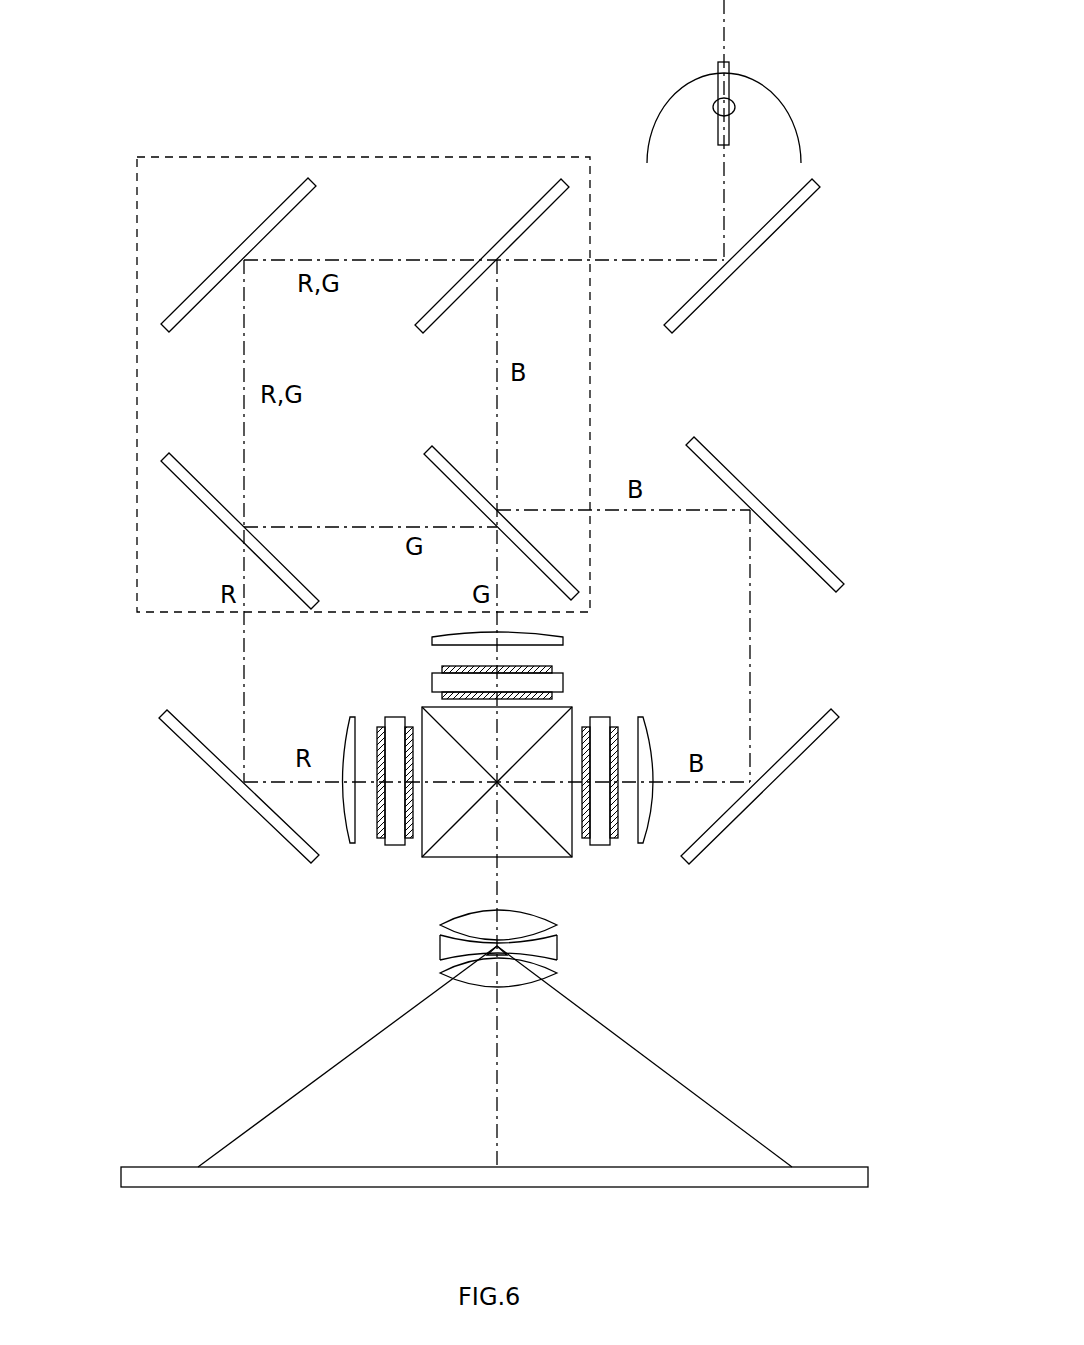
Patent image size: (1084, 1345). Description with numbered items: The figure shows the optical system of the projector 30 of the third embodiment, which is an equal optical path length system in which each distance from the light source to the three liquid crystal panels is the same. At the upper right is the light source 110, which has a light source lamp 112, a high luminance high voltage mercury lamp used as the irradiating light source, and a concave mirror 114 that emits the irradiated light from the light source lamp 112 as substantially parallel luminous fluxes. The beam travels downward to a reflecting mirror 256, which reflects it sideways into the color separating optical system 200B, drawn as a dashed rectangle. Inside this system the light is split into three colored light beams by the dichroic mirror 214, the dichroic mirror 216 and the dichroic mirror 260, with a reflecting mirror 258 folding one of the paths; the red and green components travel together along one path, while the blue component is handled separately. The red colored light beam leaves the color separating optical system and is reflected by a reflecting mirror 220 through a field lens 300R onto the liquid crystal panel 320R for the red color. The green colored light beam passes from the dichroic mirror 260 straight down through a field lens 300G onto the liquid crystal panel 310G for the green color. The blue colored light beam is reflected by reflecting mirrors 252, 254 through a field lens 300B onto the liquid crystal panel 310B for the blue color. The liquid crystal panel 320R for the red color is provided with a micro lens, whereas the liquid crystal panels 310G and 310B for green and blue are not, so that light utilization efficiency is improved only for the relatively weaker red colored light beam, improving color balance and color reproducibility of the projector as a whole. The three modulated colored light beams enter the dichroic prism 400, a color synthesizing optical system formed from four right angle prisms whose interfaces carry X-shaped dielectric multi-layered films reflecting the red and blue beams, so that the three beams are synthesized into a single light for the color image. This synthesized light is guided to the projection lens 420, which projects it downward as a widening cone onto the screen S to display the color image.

The projector 30 is at (403, 100).
The light source 110 is at (784, 104).
The light source lamp 112 is at (735, 107).
The concave mirror 114 is at (672, 92).
The color separating optical system 200B is at (137, 510).
The dichroic mirror 214 is at (531, 208).
The dichroic mirror 216 is at (210, 515).
The reflecting mirror 220 is at (207, 770).
The reflecting mirror 252 is at (738, 477).
The reflecting mirror 254 is at (735, 823).
The reflecting mirror 256 is at (710, 297).
The reflecting mirror 258 is at (291, 198).
The dichroic mirror 260 is at (452, 460).
The field lens 300G is at (436, 632).
The liquid crystal panel 310G is at (432, 680).
The field lens 300R is at (353, 843).
The liquid crystal panel 320R is at (395, 845).
The liquid crystal panel 310B is at (598, 845).
The field lens 300B is at (645, 843).
The dichroic prism 400 is at (535, 857).
The projection lens 420 is at (433, 912).
The screen S is at (832, 1167).